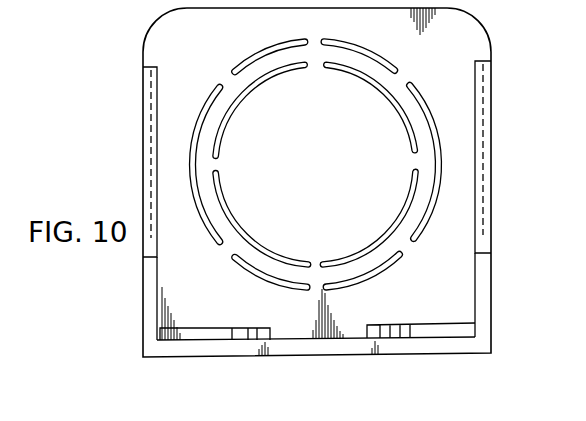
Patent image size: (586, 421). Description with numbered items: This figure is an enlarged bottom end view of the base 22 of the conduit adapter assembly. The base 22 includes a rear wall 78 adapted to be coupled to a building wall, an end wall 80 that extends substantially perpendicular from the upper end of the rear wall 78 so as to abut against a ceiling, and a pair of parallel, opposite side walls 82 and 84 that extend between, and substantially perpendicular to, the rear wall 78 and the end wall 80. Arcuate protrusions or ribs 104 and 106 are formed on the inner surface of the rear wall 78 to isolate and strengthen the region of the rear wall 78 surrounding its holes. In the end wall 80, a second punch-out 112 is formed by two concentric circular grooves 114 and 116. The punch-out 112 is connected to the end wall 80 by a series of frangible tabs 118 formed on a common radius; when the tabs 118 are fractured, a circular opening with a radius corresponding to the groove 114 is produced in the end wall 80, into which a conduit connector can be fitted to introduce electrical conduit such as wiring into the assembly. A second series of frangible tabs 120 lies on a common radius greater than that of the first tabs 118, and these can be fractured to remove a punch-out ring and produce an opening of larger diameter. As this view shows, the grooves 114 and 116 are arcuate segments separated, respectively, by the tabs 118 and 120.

The base 22 is at (141, 148).
The rear wall 78 is at (318, 357).
The end wall 80 is at (462, 40).
The side wall 82 is at (143, 288).
The side wall 84 is at (492, 290).
The arcuate protrusion or rib 104 is at (188, 339).
The arcuate protrusion or rib 106 is at (440, 333).
The second punch-out 112 is at (405, 188).
The circular groove 114 is at (371, 84).
The circular groove 116 is at (373, 275).
The frangible tabs 118 is at (417, 165).
The second series of frangible tabs 120 is at (228, 74).